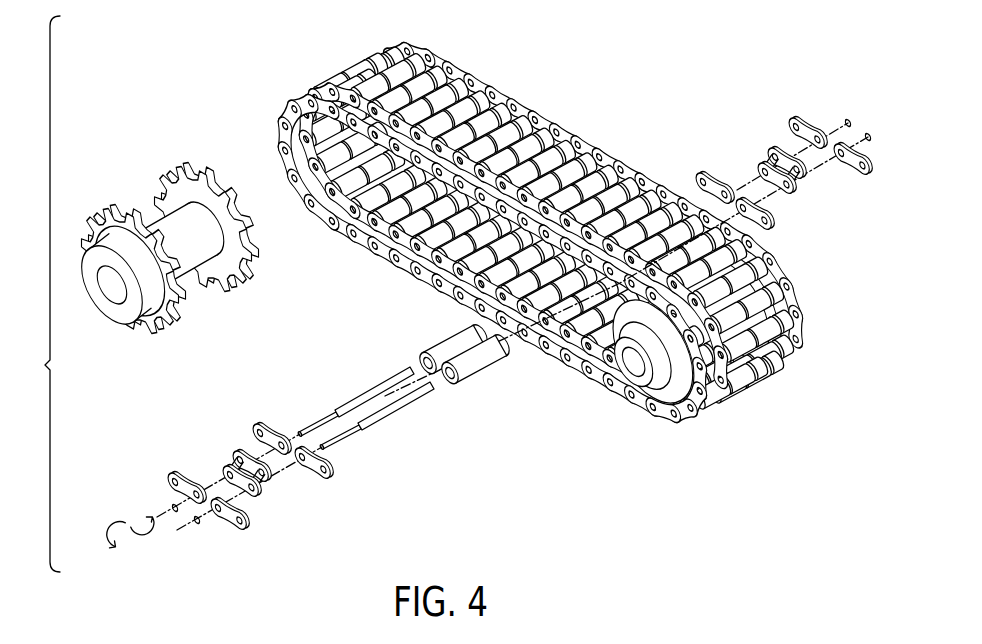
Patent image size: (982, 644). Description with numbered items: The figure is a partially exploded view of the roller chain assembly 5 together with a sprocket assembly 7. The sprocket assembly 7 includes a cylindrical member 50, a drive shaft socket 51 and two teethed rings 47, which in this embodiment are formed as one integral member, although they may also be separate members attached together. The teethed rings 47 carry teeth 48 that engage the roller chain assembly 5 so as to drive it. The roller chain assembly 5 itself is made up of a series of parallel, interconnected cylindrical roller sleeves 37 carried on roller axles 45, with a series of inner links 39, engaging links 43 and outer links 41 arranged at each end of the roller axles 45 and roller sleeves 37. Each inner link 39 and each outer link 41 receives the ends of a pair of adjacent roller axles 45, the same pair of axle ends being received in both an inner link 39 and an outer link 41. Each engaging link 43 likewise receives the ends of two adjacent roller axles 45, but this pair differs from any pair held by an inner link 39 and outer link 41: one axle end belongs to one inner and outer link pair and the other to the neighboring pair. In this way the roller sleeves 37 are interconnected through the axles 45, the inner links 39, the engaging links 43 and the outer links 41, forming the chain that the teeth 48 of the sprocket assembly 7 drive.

The roller chain assembly 5 is at (431, 234).
The sprocket assembly 7 is at (375, 292).
The cylindrical roller sleeve 37 is at (468, 352).
The inner link 39 is at (262, 427).
The outer link 41 is at (185, 470).
The engaging link 43 is at (240, 452).
The roller axle 45 is at (357, 398).
The teethed ring 47 is at (158, 248).
The teeth 48 is at (128, 208).
The cylindrical member 50 is at (188, 278).
The drive shaft socket 51 is at (112, 312).